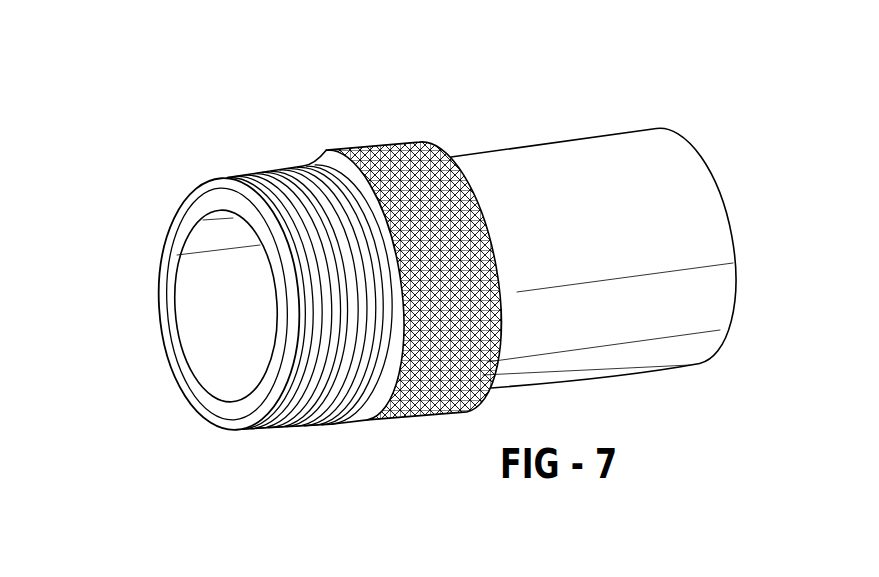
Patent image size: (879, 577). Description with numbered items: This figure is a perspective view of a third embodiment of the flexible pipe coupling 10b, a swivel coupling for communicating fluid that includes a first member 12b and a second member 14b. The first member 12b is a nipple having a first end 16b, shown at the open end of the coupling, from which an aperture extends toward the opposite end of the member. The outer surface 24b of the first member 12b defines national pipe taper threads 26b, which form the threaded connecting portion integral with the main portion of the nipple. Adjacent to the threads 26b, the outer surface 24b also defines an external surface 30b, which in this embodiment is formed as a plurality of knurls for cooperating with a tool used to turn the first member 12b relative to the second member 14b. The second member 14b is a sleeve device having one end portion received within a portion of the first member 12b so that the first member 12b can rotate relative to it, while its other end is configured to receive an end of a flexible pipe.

The flexible pipe coupling 10b is at (409, 271).
The first member 12b is at (222, 275).
The second member 14b is at (698, 392).
The first end 16b is at (230, 428).
The outer surface 24b is at (413, 288).
The threads 26b is at (260, 173).
The external surface 30b is at (408, 168).